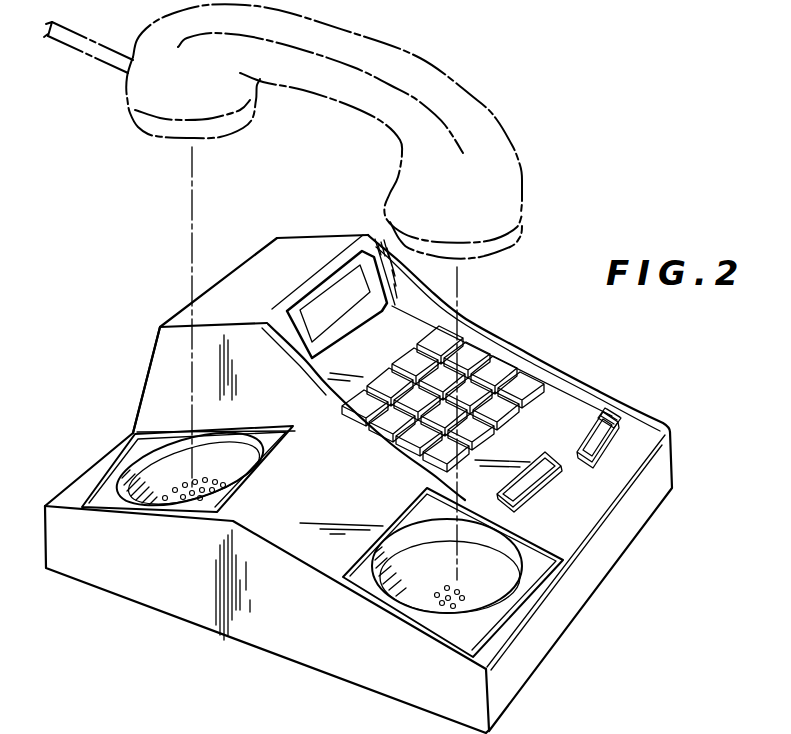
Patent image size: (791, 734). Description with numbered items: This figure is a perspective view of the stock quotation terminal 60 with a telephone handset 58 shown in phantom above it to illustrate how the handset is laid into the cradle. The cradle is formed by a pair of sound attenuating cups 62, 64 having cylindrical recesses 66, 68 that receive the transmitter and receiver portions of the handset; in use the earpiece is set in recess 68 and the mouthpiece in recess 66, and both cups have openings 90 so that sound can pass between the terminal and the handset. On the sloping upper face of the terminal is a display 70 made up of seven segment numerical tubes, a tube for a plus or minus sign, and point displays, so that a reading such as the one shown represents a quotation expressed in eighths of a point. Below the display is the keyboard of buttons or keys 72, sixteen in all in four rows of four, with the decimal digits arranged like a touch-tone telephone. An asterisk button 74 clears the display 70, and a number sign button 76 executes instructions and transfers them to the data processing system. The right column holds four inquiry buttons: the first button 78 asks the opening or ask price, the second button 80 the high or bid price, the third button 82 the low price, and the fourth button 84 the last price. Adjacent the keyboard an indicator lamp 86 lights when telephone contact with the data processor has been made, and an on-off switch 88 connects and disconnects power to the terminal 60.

The telephone handset 58 is at (510, 180).
The stock quotation terminal 60 is at (674, 456).
The sound attenuating cup 62 is at (223, 498).
The sound attenuating cup 64 is at (487, 622).
The cylindrical recess 66 is at (131, 474).
The cylindrical recess 68 is at (374, 572).
The display 70 is at (373, 288).
The buttons or keys 72 is at (375, 380).
The asterisk button 74 is at (463, 457).
The numerical sign button 76 is at (510, 417).
The first button 78 is at (460, 324).
The second button 80 is at (487, 339).
The third button 82 is at (519, 356).
The fourth button 84 is at (545, 374).
The indicator lamp 86 is at (530, 488).
The on-off switch 88 is at (617, 428).
The openings 90 is at (205, 478).